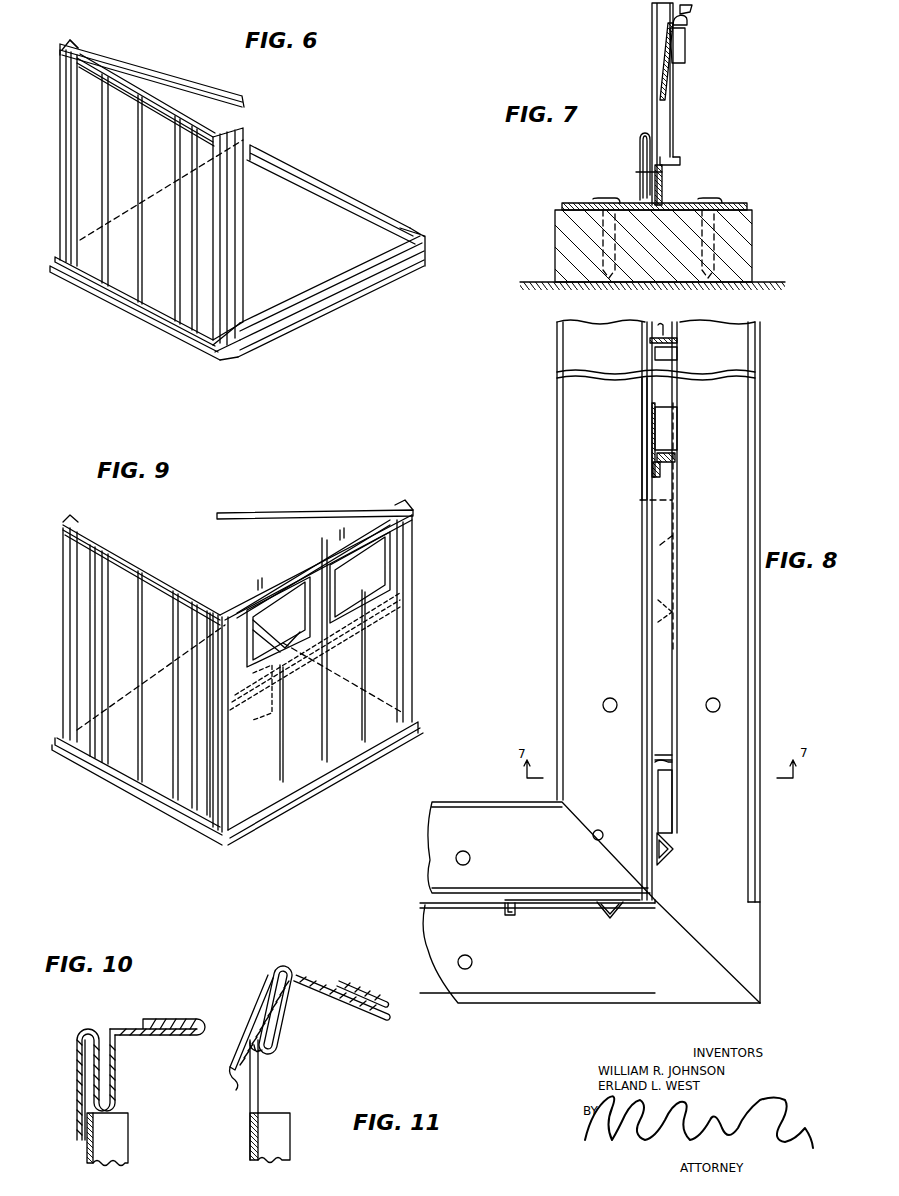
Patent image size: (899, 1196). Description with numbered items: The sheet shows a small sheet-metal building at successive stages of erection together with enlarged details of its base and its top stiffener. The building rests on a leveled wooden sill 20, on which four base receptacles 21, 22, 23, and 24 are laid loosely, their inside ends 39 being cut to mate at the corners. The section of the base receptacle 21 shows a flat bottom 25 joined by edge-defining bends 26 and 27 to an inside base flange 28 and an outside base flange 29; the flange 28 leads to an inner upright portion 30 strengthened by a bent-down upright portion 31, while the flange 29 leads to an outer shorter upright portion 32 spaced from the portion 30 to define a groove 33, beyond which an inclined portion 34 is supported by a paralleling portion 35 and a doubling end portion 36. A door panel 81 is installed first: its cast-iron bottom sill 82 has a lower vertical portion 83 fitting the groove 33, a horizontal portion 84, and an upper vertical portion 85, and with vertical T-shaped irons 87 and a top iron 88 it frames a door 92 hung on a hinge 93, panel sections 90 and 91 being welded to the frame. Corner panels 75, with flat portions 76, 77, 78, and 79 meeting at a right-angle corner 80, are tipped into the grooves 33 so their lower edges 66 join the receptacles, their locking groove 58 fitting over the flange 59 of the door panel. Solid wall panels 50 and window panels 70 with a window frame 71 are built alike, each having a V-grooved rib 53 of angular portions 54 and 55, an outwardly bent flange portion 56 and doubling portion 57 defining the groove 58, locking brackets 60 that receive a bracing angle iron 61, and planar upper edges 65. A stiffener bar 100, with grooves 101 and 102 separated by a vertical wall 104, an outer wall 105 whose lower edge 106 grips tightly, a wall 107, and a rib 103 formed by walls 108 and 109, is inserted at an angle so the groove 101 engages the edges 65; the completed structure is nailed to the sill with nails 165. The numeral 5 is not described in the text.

In FIG. 9, the wall panel section 5 is at (340, 688).
In FIG. 6, the wooden sill 20 is at (362, 192).
In FIG. 7, the wooden sill 20 is at (764, 258).
In FIG. 8, the wooden sill 20 is at (770, 948).
In FIG. 9, the wooden sill 20 is at (296, 814).
In FIG. 6, the base receptacle 21 is at (125, 300).
In FIG. 7, the base receptacle 21 is at (757, 205).
In FIG. 8, the base receptacle 21 is at (550, 613).
In FIG. 9, the base receptacle 21 is at (118, 778).
In FIG. 6, the base receptacle 22 is at (354, 251).
In FIG. 9, the base receptacle 22 is at (338, 783).
In FIG. 6, the base receptacle 23 is at (259, 154).
In FIG. 8, the base receptacle 23 is at (486, 794).
In FIG. 9, the base receptacle 24 is at (274, 626).
In FIG. 7, the flat bottom 25 is at (578, 220).
In FIG. 7, the edge-defining bend 26 is at (560, 207).
In FIG. 8, the edge-defining bend 26 is at (557, 686).
In FIG. 7, the edge-defining bend 27 is at (748, 210).
In FIG. 8, the edge-defining bend 27 is at (756, 684).
In FIG. 6, the inside base flange 28 is at (335, 276).
In FIG. 7, the inside base flange 28 is at (580, 202).
In FIG. 8, the inside base flange 28 is at (611, 622).
In FIG. 6, the outside base flange 29 is at (80, 278).
In FIG. 7, the outside base flange 29 is at (740, 200).
In FIG. 8, the outside base flange 29 is at (729, 624).
In FIG. 6, the inner upright portion 30 is at (402, 228).
In FIG. 7, the inner upright portion 30 is at (640, 163).
In FIG. 7, the bent-down upright portion 31 is at (640, 148).
In FIG. 8, the bent-down upright portion 31 is at (652, 838).
In FIG. 7, the outer shorter upright portion 32 is at (670, 210).
In FIG. 7, the groove 33 is at (640, 196).
In FIG. 8, the groove 33 is at (655, 857).
In FIG. 6, the inclined portion 34 is at (175, 338).
In FIG. 7, the inclined portion 34 is at (680, 163).
In FIG. 8, the inclined portion 34 is at (678, 658).
In FIG. 9, the inclined portion 34 is at (170, 823).
In FIG. 7, the paralleling portion 35 is at (663, 172).
In FIG. 7, the doubling end portion 36 is at (663, 188).
In FIG. 6, the inside ends 39 is at (218, 356).
In FIG. 8, the inside ends 39 is at (593, 838).
In FIG. 9, the inside ends 39 is at (215, 843).
In FIG. 10, the solid wall panel 50 is at (80, 1163).
In FIG. 11, the solid wall panel 50 is at (243, 1153).
In FIG. 6, the V-grooved rib 53 is at (92, 170).
In FIG. 7, the V-grooved rib 53 is at (675, 78).
In FIG. 8, the V-grooved rib 53 is at (680, 606).
In FIG. 9, the V-grooved rib 53 is at (93, 708).
In FIG. 10, the V-grooved rib 53 is at (128, 1130).
In FIG. 11, the V-grooved rib 53 is at (288, 1130).
In FIG. 8, the angular portion 54 is at (673, 840).
In FIG. 8, the angular portion 55 is at (674, 862).
In FIG. 6, the outwardly bent flange portion 56 is at (235, 275).
In FIG. 7, the outwardly bent flange portion 56 is at (686, 58).
In FIG. 8, the outwardly bent flange portion 56 is at (673, 782).
In FIG. 6, the inwardly bent doubling portion 57 is at (80, 192).
In FIG. 7, the inwardly bent doubling portion 57 is at (693, 9).
In FIG. 8, the inwardly bent doubling portion 57 is at (672, 748).
In FIG. 9, the inwardly bent doubling portion 57 is at (85, 720).
In FIG. 7, the locking groove 58 is at (688, 22).
In FIG. 8, the locking groove 58 is at (672, 760).
In FIG. 7, the flange 59 is at (655, 22).
In FIG. 8, the flange 59 is at (655, 765).
In FIG. 9, the locking bracket 60 is at (365, 648).
In FIG. 9, the angle iron 61 is at (258, 685).
In FIG. 6, the upper edge 65 is at (80, 53).
In FIG. 8, the upper edge 65 is at (655, 786).
In FIG. 9, the upper edge 65 is at (240, 597).
In FIG. 7, the lower edge 66 is at (660, 97).
In FIG. 10, the lower edge 66 is at (78, 1100).
In FIG. 11, the lower edge 66 is at (259, 1097).
In FIG. 9, the window panel 70 is at (313, 740).
In FIG. 9, the window frame 71 is at (295, 565).
In FIG. 6, the corner panel 75 is at (57, 126).
In FIG. 8, the corner panel 75 is at (425, 672).
In FIG. 9, the corner panel 75 is at (60, 687).
In FIG. 7, the flat portion 76 is at (686, 43).
In FIG. 8, the flat portion 76 is at (652, 807).
In FIG. 8, the flat portion 77 is at (547, 895).
In FIG. 8, the flat portion 78 is at (675, 888).
In FIG. 8, the flat portion 79 is at (630, 897).
In FIG. 8, the right-angle corner 80 is at (660, 908).
In FIG. 6, the door panel 81 is at (140, 82).
In FIG. 7, the door panel 81 is at (645, 46).
In FIG. 8, the door panel 81 is at (639, 436).
In FIG. 9, the door panel 81 is at (127, 583).
In FIG. 6, the bottom sill 82 is at (130, 268).
In FIG. 7, the bottom sill 82 is at (666, 147).
In FIG. 8, the bottom sill 82 is at (668, 397).
In FIG. 9, the bottom sill 82 is at (122, 763).
In FIG. 7, the lower vertical portion 83 is at (636, 174).
In FIG. 6, the horizontal portion 84 is at (198, 338).
In FIG. 7, the horizontal portion 84 is at (682, 150).
In FIG. 8, the horizontal portion 84 is at (678, 410).
In FIG. 9, the horizontal portion 84 is at (195, 828).
In FIG. 7, the upper vertical portion 85 is at (648, 132).
In FIG. 8, the upper vertical portion 85 is at (650, 396).
In FIG. 6, the T-shaped iron 87 is at (107, 238).
In FIG. 7, the T-shaped iron 87 is at (652, 57).
In FIG. 8, the T-shaped iron 87 is at (682, 340).
In FIG. 9, the T-shaped iron 87 is at (100, 693).
In FIG. 6, the top iron 88 is at (163, 103).
In FIG. 8, the top iron 88 is at (675, 570).
In FIG. 9, the top iron 88 is at (165, 566).
In FIG. 6, the panel section 90 is at (195, 223).
In FIG. 7, the panel section 90 is at (645, 80).
In FIG. 8, the panel section 90 is at (686, 540).
In FIG. 9, the panel section 90 is at (97, 645).
In FIG. 6, the panel section 91 is at (87, 88).
In FIG. 8, the panel section 91 is at (663, 325).
In FIG. 9, the panel section 91 is at (185, 708).
In FIG. 6, the door 92 is at (167, 180).
In FIG. 8, the door 92 is at (680, 354).
In FIG. 9, the door 92 is at (167, 654).
In FIG. 6, the hinge 93 is at (110, 185).
In FIG. 8, the hinge 93 is at (678, 456).
In FIG. 9, the hinge 93 is at (110, 676).
In FIG. 6, the stiffener bar 100 is at (219, 83).
In FIG. 9, the stiffener bar 100 is at (195, 586).
In FIG. 10, the stiffener bar 100 is at (75, 1024).
In FIG. 11, the stiffener bar 100 is at (320, 948).
In FIG. 10, the groove 101 is at (85, 1062).
In FIG. 11, the groove 101 is at (277, 978).
In FIG. 10, the groove 102 is at (108, 1078).
In FIG. 11, the groove 102 is at (288, 1010).
In FIG. 6, the strengthening rib 103 is at (197, 76).
In FIG. 9, the strengthening rib 103 is at (62, 530).
In FIG. 10, the strengthening rib 103 is at (190, 1018).
In FIG. 11, the strengthening rib 103 is at (378, 1022).
In FIG. 10, the vertical wall 104 is at (112, 1055).
In FIG. 11, the vertical wall 104 is at (275, 1022).
In FIG. 6, the vertical wall 105 is at (244, 100).
In FIG. 9, the vertical wall 105 is at (214, 516).
In FIG. 10, the vertical wall 105 is at (76, 1082).
In FIG. 11, the vertical wall 105 is at (248, 1036).
In FIG. 6, the lower edge 106 is at (244, 104).
In FIG. 9, the lower edge 106 is at (224, 524).
In FIG. 10, the lower edge 106 is at (78, 1142).
In FIG. 11, the lower edge 106 is at (236, 1090).
In FIG. 6, the vertical wall 107 is at (60, 51).
In FIG. 9, the vertical wall 107 is at (243, 520).
In FIG. 10, the vertical wall 107 is at (118, 1088).
In FIG. 11, the vertical wall 107 is at (278, 1045).
In FIG. 10, the wall 108 is at (155, 1020).
In FIG. 11, the wall 108 is at (368, 1000).
In FIG. 10, the wall 109 is at (167, 1018).
In FIG. 11, the wall 109 is at (372, 1000).
In FIG. 7, the nails 165 is at (720, 198).
In FIG. 8, the nails 165 is at (728, 685).